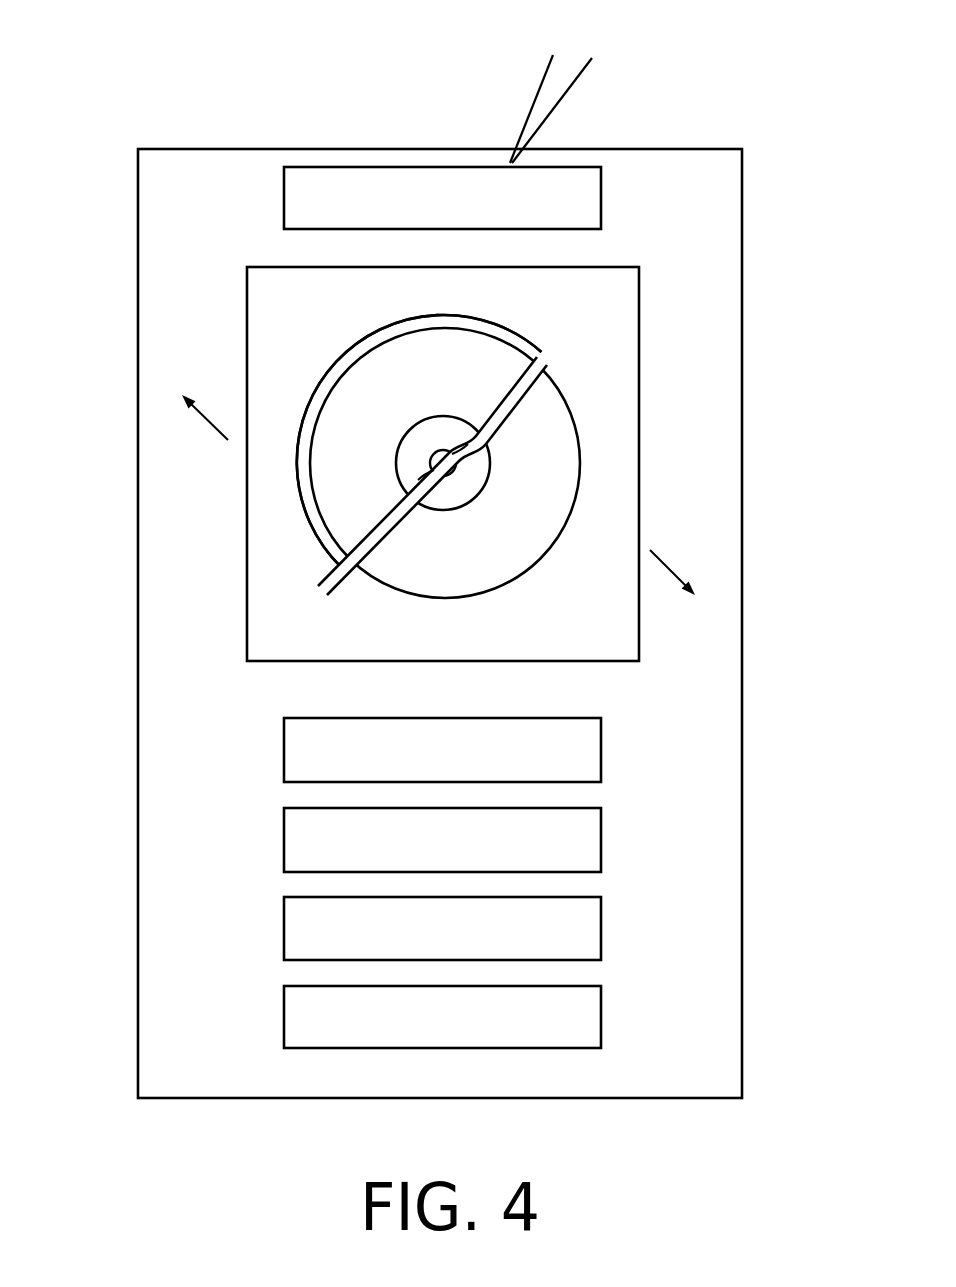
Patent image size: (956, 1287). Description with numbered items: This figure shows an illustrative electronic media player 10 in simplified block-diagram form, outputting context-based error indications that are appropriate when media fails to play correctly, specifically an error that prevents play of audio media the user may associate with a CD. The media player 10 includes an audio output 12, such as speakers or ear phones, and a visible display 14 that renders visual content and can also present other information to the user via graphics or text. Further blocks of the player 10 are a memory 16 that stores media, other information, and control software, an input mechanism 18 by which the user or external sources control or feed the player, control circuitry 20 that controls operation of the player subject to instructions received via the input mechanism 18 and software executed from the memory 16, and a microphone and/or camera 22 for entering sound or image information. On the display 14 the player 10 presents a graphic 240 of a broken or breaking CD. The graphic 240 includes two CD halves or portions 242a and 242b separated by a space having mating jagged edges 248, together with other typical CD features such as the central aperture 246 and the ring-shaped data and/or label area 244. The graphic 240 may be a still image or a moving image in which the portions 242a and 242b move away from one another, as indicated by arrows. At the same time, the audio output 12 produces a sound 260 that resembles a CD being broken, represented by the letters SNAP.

The electronic media player 10 is at (138, 233).
The audio output 12 is at (601, 196).
The visible display 14 is at (640, 410).
The memory 16 is at (601, 749).
The input mechanism 18 is at (601, 833).
The control circuitry 20 is at (601, 917).
The microphone and/or camera 22 is at (601, 1000).
The graphic 240 is at (275, 647).
The CD half or portion 242a is at (348, 355).
The CD half or portion 242b is at (535, 577).
The ring-shaped data and/or label area 244 is at (557, 440).
The central aperture 246 is at (480, 432).
The mating jagged edges 248 is at (353, 563).
The sound 260 is at (672, 63).